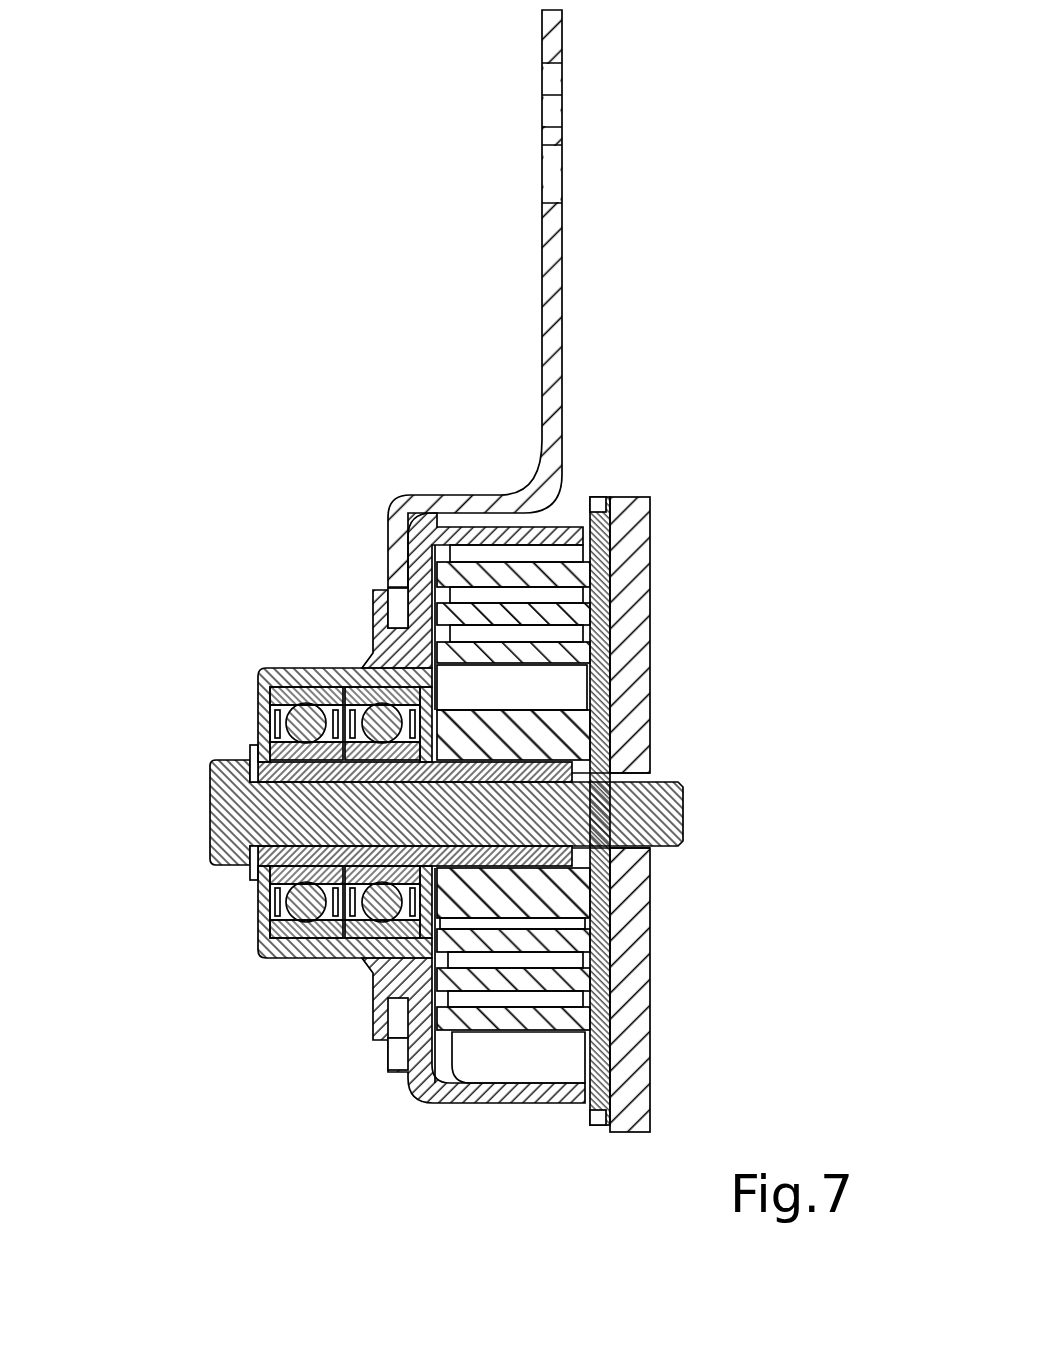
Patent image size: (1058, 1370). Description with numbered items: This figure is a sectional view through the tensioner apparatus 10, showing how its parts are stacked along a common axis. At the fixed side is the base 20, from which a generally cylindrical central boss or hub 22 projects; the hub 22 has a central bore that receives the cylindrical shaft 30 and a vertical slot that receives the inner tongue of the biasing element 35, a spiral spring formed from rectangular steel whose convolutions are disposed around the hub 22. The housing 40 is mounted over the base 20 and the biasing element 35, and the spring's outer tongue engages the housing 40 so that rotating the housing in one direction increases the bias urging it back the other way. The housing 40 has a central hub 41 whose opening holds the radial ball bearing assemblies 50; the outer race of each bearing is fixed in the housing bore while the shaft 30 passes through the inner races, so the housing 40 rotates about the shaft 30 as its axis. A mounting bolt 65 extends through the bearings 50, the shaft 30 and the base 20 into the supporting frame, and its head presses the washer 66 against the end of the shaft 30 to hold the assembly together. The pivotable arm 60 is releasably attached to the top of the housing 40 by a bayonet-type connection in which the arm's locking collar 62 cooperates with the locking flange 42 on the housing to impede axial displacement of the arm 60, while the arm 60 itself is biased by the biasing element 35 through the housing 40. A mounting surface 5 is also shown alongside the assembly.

The mounting plate 5 is at (630, 985).
The tensioner apparatus 10 is at (584, 404).
The base 20 is at (605, 1083).
The hub 22 is at (480, 720).
The shaft 30 is at (533, 767).
The biasing element 35 is at (550, 573).
The housing 40 is at (422, 1090).
The central hub 41 is at (290, 672).
The locking flange 42 is at (372, 1017).
The bearing assemblies 50 is at (318, 958).
The pivotable arm 60 is at (555, 258).
The locking collar 62 is at (393, 1067).
The mounting bolt 65 is at (207, 794).
The washer 66 is at (245, 743).